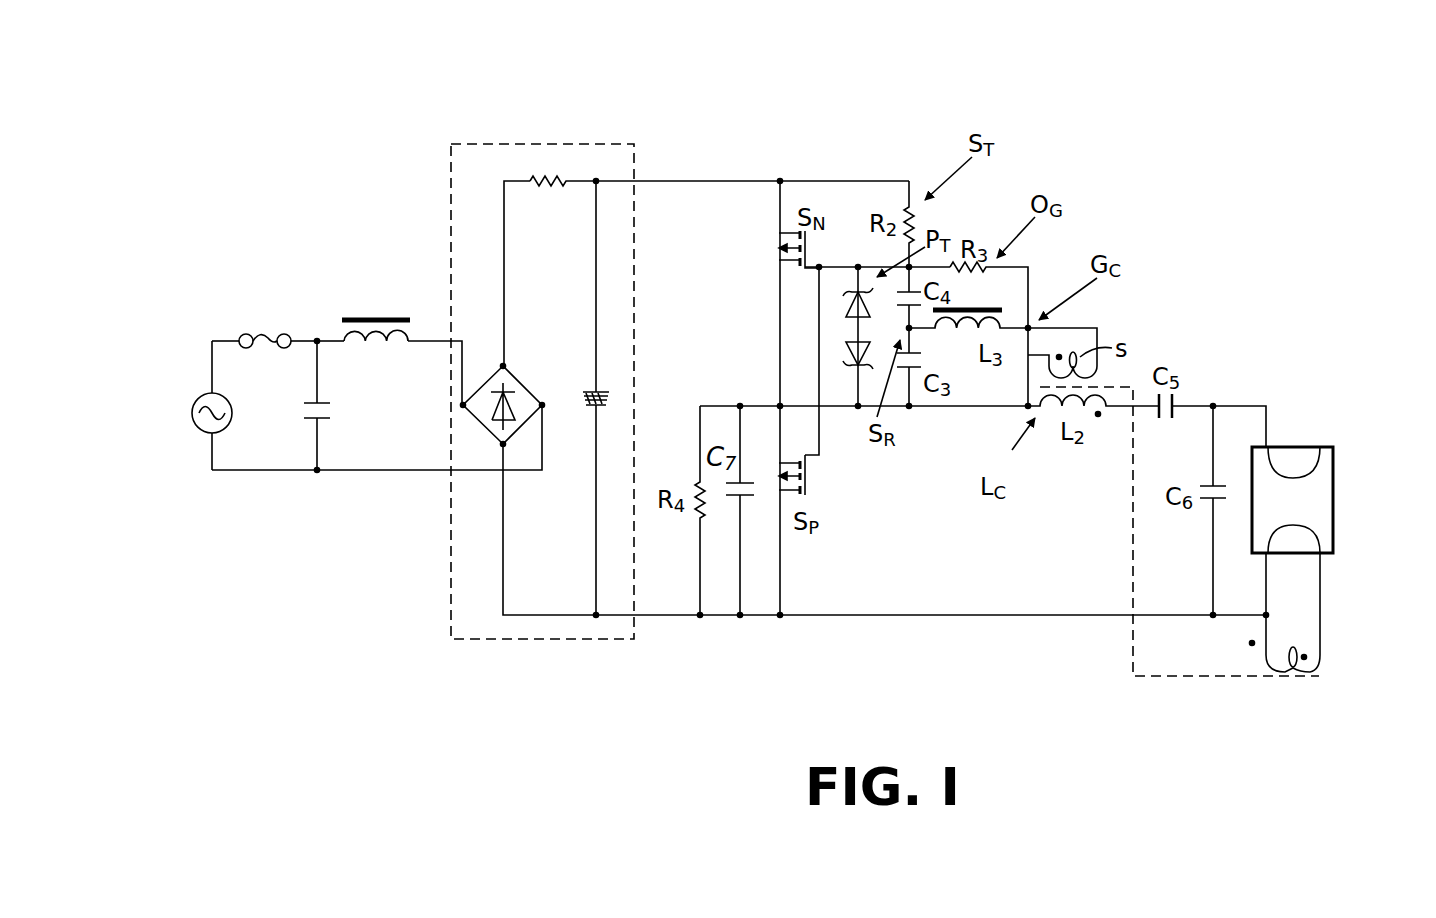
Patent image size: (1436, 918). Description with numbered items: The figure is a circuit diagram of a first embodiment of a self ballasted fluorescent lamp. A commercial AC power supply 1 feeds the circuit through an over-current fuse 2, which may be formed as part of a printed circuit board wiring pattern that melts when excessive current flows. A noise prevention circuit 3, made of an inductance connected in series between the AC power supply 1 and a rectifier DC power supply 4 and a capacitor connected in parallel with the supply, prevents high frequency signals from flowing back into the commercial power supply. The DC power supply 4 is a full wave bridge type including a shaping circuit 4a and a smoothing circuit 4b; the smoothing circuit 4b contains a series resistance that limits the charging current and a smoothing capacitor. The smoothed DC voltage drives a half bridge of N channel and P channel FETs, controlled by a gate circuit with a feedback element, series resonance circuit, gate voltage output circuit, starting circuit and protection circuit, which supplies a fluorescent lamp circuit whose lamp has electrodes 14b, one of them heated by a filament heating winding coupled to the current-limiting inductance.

The AC power supply 1 is at (191, 418).
The over-current fuse 2 is at (270, 334).
The noise prevention circuit 3 is at (330, 348).
The rectifier DC power supply 4 is at (549, 339).
The shaping circuit 4a is at (483, 423).
The smoothing circuit 4b is at (577, 192).
The electrodes 14b is at (1320, 455).